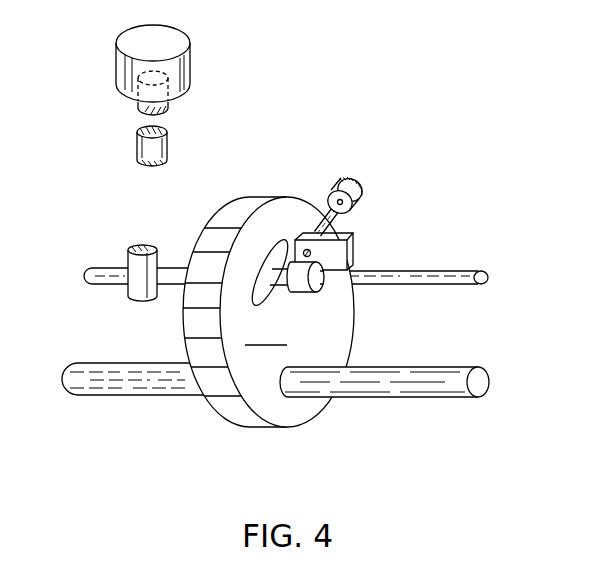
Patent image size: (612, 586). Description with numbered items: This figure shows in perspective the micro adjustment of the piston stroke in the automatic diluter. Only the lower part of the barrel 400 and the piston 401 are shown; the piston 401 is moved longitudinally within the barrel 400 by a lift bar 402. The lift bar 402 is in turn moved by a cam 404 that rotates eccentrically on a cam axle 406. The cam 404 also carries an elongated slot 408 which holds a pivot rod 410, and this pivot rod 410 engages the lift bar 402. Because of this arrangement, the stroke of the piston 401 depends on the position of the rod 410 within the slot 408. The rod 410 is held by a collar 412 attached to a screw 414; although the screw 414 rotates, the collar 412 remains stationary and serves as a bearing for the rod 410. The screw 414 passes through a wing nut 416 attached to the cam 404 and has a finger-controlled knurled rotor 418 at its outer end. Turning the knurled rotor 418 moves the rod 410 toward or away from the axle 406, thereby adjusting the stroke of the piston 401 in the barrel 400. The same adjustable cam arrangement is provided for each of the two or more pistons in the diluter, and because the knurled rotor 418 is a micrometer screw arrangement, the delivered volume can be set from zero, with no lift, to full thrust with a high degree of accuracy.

The barrel 400 is at (192, 63).
The piston 401 is at (168, 107).
The lift bar 402 is at (127, 252).
The cam 404 is at (268, 312).
The cam axle 406 is at (367, 397).
The elongated slot 408 is at (262, 288).
The pivot rod 410 is at (360, 271).
The collar 412 is at (323, 287).
The screw 414 is at (327, 205).
The wing nut 416 is at (352, 240).
The knurled rotor 418 is at (358, 183).